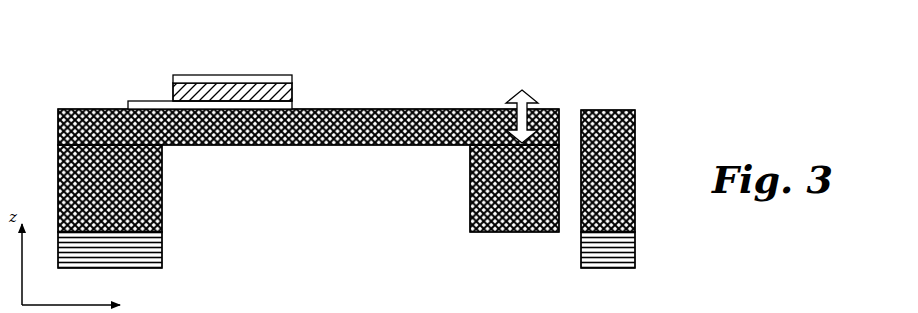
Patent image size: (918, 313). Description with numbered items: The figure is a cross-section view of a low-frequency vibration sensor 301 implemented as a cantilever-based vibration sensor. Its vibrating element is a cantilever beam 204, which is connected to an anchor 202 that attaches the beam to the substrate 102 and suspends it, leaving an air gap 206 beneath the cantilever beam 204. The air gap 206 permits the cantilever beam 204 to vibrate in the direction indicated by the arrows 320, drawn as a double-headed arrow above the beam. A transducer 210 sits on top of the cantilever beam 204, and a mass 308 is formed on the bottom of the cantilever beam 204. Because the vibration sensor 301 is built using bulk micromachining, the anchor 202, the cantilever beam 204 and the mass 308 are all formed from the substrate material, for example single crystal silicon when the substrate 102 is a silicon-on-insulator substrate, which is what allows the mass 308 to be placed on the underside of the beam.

The substrate 102 is at (775, 285).
The anchor 202 is at (110, 188).
The cantilever beam 204 is at (308, 127).
The air gap 206 is at (312, 190).
The transducer 210 is at (232, 70).
The low-frequency vibration sensor 301 is at (437, 72).
The mass 308 is at (472, 182).
The arrows 320 is at (535, 107).